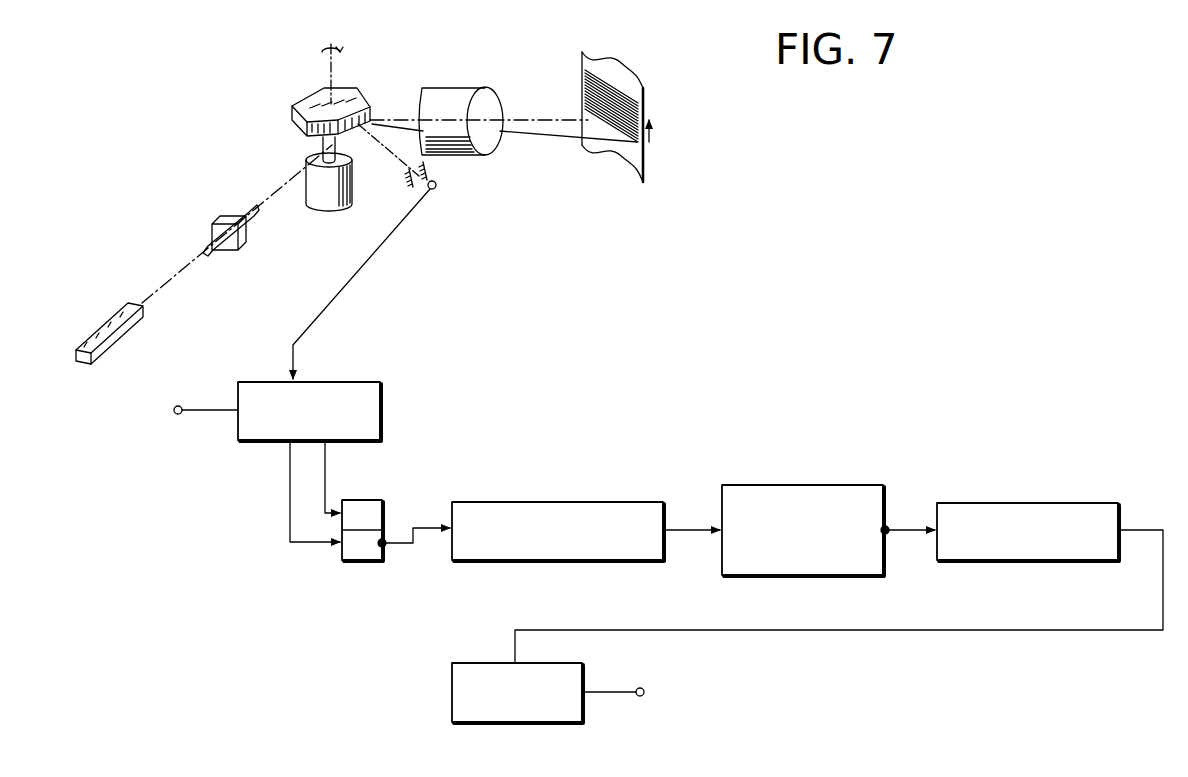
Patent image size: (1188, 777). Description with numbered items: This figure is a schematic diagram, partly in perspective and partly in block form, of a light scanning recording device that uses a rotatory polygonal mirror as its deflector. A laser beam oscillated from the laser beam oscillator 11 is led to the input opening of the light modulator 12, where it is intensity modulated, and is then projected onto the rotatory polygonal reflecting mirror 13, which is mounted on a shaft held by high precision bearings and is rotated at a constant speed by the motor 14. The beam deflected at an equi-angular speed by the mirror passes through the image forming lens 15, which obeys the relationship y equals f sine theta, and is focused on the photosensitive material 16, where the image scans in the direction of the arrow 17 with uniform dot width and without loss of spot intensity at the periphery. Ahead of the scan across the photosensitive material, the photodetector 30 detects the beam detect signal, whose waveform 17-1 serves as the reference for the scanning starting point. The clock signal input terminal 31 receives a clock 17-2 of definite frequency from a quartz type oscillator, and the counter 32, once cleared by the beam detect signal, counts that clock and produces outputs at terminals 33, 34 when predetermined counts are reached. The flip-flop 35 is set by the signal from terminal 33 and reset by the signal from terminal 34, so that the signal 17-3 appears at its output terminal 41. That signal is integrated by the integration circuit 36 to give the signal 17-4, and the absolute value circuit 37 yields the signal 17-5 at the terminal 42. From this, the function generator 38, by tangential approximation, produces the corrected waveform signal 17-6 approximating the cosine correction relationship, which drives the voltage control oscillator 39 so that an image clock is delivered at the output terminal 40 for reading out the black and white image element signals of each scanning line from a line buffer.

The laser beam oscillator 11 is at (118, 316).
The light modulator 12 is at (224, 228).
The rotatory polygonal reflecting mirror 13 is at (309, 100).
The motor 14 is at (316, 196).
The image forming lens 15 is at (460, 96).
The photosensitive material 16 is at (617, 83).
The arrow 17 is at (612, 130).
The photodetector 30 is at (436, 186).
The BD signal waveform 17-1 is at (382, 246).
The clock signal input terminal 31 is at (178, 405).
The clock 17-2 is at (205, 411).
The counter 32 is at (382, 404).
The output terminal 33 is at (289, 478).
The output terminal 34 is at (326, 468).
The flip-flop 35 is at (357, 562).
The output terminal 41 is at (385, 546).
The flip-flop output signal 17-3 is at (398, 537).
The integration circuit 36 is at (563, 502).
The integrated signal 17-4 is at (692, 527).
The absolute value circuit 37 is at (805, 485).
The terminal 42 is at (888, 533).
The absolute value signal 17-5 is at (914, 527).
The function generator 38 is at (1027, 503).
The corrected waveform signal 17-6 is at (1147, 528).
The voltage control oscillator 39 is at (450, 692).
The output terminal 40 is at (639, 687).